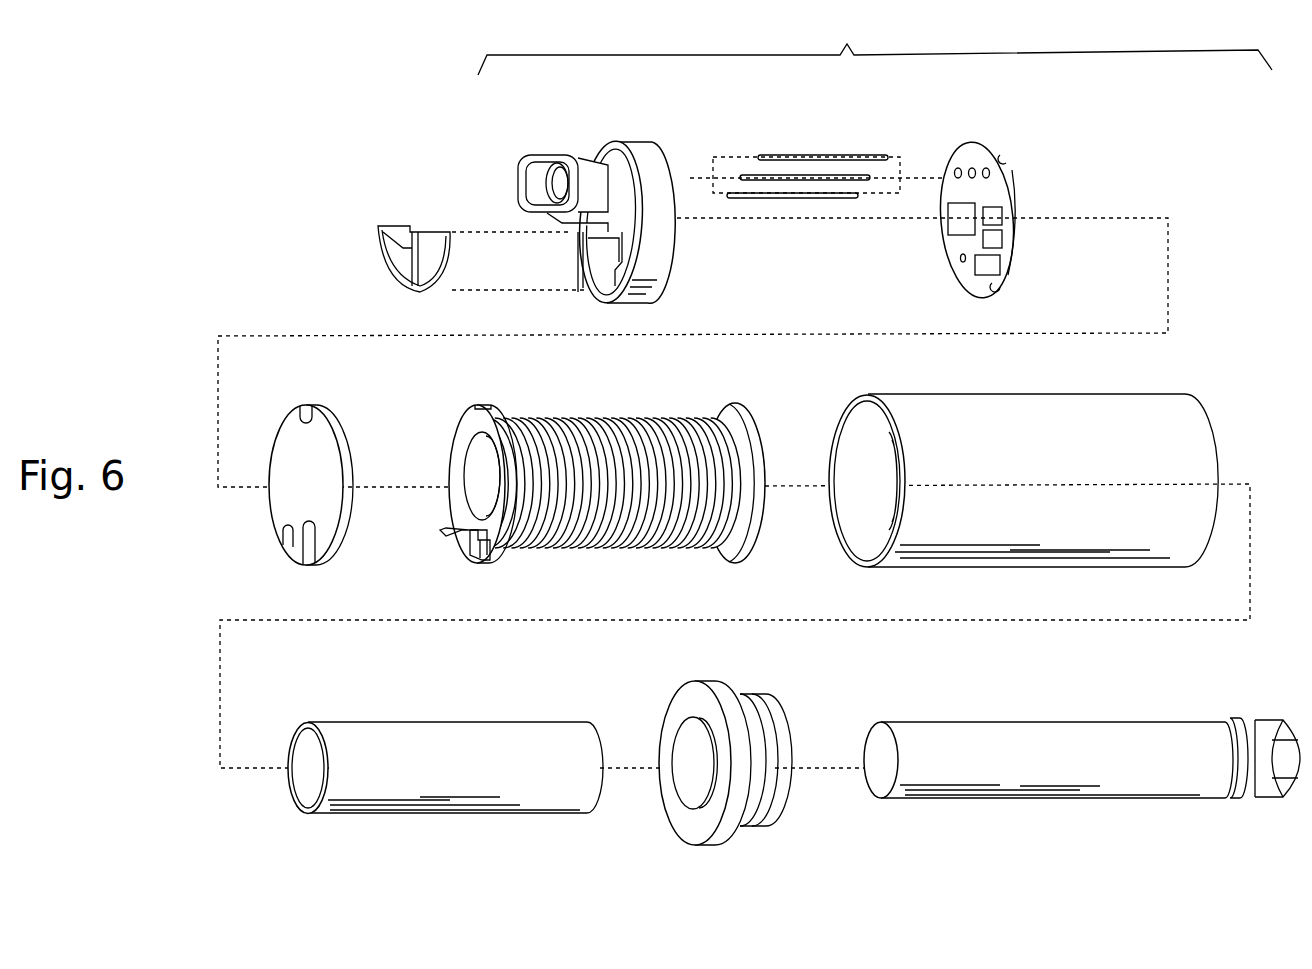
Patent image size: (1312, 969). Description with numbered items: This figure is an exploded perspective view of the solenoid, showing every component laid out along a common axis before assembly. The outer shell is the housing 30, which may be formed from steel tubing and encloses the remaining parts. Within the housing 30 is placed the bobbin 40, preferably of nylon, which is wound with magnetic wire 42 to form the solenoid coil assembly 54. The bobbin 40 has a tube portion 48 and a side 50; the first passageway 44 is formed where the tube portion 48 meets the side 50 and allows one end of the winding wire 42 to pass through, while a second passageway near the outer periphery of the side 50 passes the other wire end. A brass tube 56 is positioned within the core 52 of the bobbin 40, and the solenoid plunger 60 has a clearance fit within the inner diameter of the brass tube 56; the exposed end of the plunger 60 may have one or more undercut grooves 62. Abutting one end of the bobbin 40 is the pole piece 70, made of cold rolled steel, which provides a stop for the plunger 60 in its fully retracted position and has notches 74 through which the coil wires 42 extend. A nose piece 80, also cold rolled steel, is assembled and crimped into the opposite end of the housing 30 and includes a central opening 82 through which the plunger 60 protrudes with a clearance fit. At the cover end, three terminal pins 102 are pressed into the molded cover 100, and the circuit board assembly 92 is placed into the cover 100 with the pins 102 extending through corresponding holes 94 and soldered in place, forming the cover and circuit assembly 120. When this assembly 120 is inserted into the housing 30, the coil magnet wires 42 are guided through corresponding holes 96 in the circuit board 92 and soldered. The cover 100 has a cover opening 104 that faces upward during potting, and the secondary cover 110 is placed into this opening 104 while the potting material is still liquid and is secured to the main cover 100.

The cover and circuit assembly 120 is at (875, 45).
The cover 100 is at (613, 142).
The cover opening 104 is at (598, 257).
The secondary cover 110 is at (382, 272).
The terminal pins 102 is at (755, 193).
The circuit board assembly 92 is at (947, 166).
The holes 94 is at (986, 168).
The holes 96 is at (961, 263).
The pole piece 70 is at (300, 490).
The notches 74 is at (292, 527).
The bobbin 40 is at (592, 418).
The magnetic wire 42 is at (680, 418).
The solenoid coil assembly 54 is at (600, 565).
The tube portion 48 is at (472, 458).
The core 52 is at (470, 478).
The first passageway 44 is at (465, 540).
The bobbin side 50 is at (733, 555).
The housing 30 is at (1005, 395).
The brass tube 56 is at (498, 775).
The nose piece 80 is at (735, 822).
The central opening 82 is at (694, 780).
The solenoid plunger 60 is at (1050, 765).
The undercut grooves 62 is at (1255, 800).